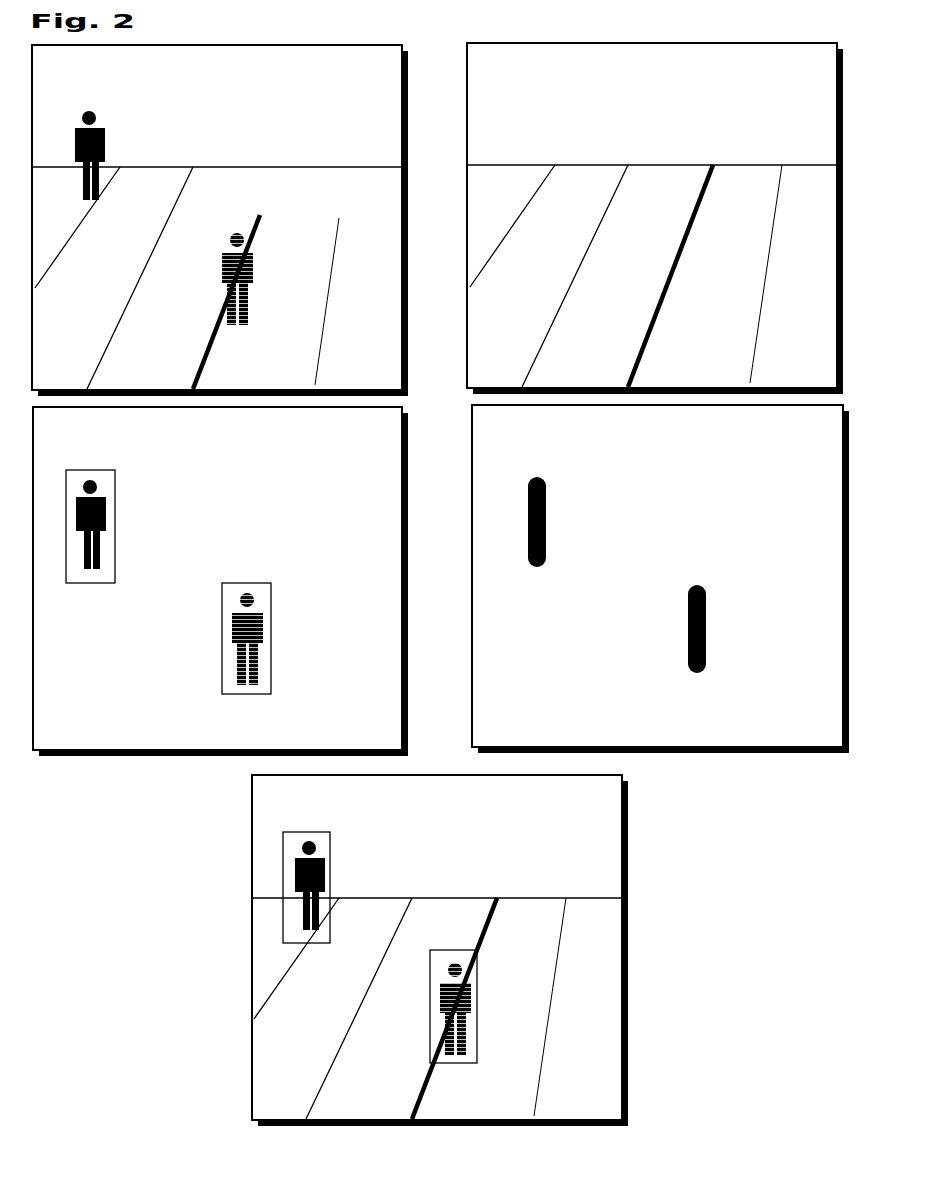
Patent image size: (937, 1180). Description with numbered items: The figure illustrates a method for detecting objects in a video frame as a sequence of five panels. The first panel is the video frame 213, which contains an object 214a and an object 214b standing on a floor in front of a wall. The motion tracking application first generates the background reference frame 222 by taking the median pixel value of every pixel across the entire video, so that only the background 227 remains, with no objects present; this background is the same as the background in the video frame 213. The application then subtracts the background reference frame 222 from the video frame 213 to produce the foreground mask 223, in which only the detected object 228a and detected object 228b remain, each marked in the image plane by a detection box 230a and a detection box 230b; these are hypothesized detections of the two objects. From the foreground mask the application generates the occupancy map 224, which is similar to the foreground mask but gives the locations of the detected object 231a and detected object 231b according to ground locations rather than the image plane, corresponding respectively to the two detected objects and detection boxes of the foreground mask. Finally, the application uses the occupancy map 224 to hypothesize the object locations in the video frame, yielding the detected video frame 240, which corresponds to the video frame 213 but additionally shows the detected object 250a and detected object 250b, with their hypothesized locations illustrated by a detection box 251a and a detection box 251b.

The video frame 213 is at (218, 219).
The object 214a is at (133, 113).
The object 214b is at (265, 228).
The background reference frame 222 is at (653, 217).
The background 227 is at (710, 142).
The foreground mask 223 is at (219, 580).
The detected object 228a is at (105, 503).
The detected object 228b is at (265, 625).
The detection box 230a is at (127, 610).
The detection box 230b is at (298, 693).
The occupancy map 224 is at (659, 577).
The detected object 231a is at (548, 500).
The detected object 231b is at (707, 610).
The detected video frame 240 is at (438, 949).
The detected object 250a is at (347, 888).
The detected object 250b is at (483, 958).
The detection box 251a is at (333, 972).
The detection box 251b is at (505, 1063).